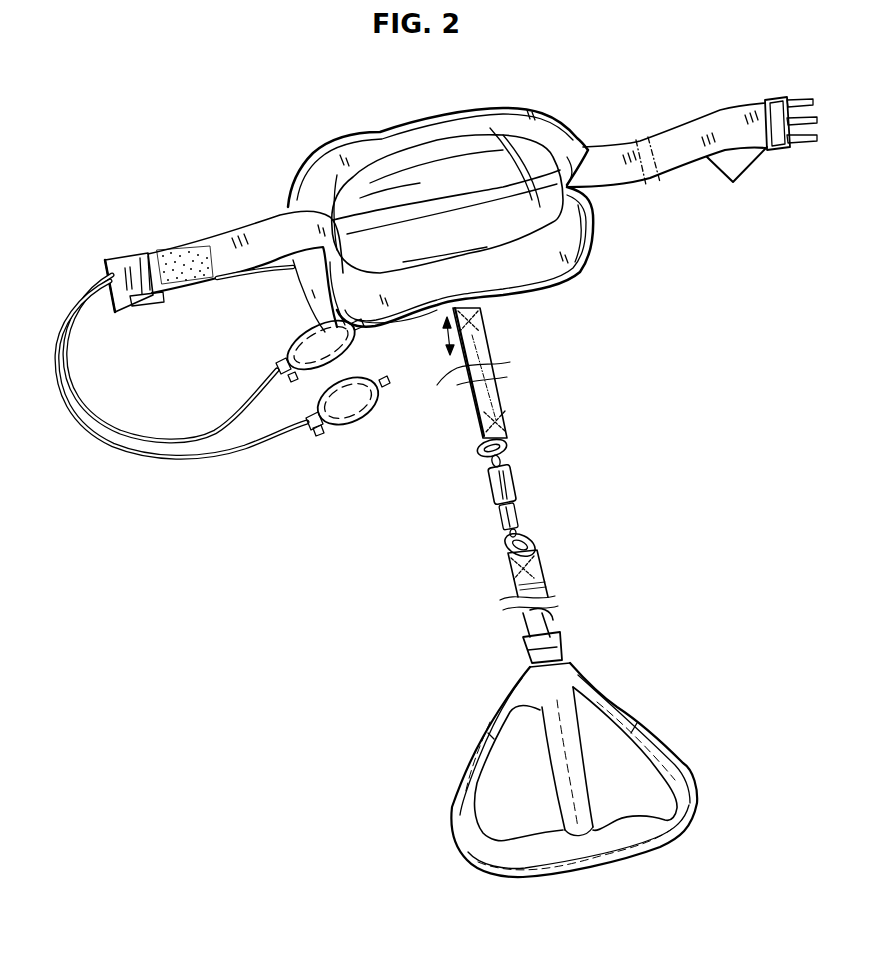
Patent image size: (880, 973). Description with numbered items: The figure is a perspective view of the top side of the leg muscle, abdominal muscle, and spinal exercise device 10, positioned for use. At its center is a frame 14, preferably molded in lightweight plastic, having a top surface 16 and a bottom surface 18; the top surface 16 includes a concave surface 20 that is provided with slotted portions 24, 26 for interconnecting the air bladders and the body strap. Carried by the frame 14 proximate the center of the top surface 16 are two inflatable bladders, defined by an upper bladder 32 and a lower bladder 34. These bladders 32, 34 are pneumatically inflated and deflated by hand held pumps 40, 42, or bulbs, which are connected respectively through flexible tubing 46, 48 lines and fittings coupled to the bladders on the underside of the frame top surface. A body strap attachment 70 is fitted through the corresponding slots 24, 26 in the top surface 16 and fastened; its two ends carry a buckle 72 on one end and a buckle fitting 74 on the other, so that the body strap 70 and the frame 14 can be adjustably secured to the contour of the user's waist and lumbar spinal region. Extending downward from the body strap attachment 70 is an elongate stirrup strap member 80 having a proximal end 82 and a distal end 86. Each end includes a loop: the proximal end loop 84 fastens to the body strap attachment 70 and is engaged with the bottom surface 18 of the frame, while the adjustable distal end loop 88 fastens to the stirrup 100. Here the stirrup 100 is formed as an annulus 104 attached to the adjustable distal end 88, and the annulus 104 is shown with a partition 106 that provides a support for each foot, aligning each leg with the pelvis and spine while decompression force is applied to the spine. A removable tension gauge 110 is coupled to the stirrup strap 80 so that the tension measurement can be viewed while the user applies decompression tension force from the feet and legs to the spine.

The leg muscle, abdominal muscle, and spinal exercise device 10 is at (598, 288).
The frame 14 is at (300, 170).
The top surface 16 is at (366, 158).
The bottom surface 18 is at (547, 290).
The concave surface 20 is at (590, 228).
The slotted portion 24 is at (567, 183).
The slotted portion 26 is at (305, 232).
The upper inflatable bladder 32 is at (456, 165).
The lower inflatable bladder 34 is at (503, 135).
The hand held pump 40 is at (337, 345).
The hand held pump 42 is at (363, 407).
The flexible tubing 46 is at (270, 276).
The flexible tubing 48 is at (90, 285).
The body strap attachment 70 is at (193, 245).
The buckle 72 is at (133, 262).
The buckle fitting 74 is at (812, 140).
The elongate stirrup strap member 80 is at (480, 338).
The proximal end 82 is at (452, 372).
The proximal end loop 84 is at (483, 318).
The distal end 86 is at (540, 602).
The adjustable distal end loop 88 is at (560, 647).
The stirrup 100 is at (567, 677).
The annulus 104 is at (647, 750).
The partition 106 is at (577, 790).
The tension gauge 110 is at (517, 498).